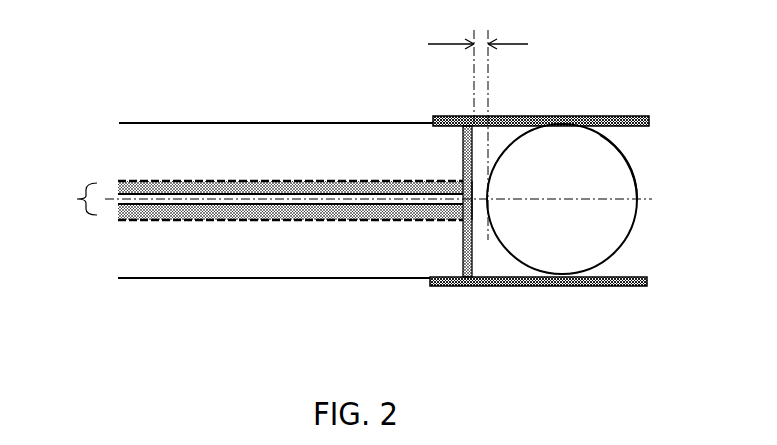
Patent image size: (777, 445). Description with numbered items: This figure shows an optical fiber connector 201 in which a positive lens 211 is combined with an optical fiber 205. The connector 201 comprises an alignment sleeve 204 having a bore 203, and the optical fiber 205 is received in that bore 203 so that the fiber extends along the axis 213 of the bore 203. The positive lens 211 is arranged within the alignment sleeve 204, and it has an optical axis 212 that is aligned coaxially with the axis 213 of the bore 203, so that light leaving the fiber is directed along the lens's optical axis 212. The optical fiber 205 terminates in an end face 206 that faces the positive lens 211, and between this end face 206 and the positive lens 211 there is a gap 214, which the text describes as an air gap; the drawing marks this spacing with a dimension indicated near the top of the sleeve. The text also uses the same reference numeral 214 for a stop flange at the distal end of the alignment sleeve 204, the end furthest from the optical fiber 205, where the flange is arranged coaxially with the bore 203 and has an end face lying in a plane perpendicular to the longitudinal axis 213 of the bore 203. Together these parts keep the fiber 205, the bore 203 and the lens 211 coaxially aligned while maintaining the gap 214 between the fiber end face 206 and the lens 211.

The optical fiber connector 201 is at (277, 92).
The bore 203 is at (216, 221).
The alignment sleeve 204 is at (480, 286).
The optical fiber 205 is at (76, 199).
The end face of the optical fiber 206 is at (465, 190).
The positive lens 211 is at (554, 168).
The optical axis of the positive lens 212 is at (637, 199).
The axis of the bore 213 is at (106, 198).
The gap 214 is at (658, 342).